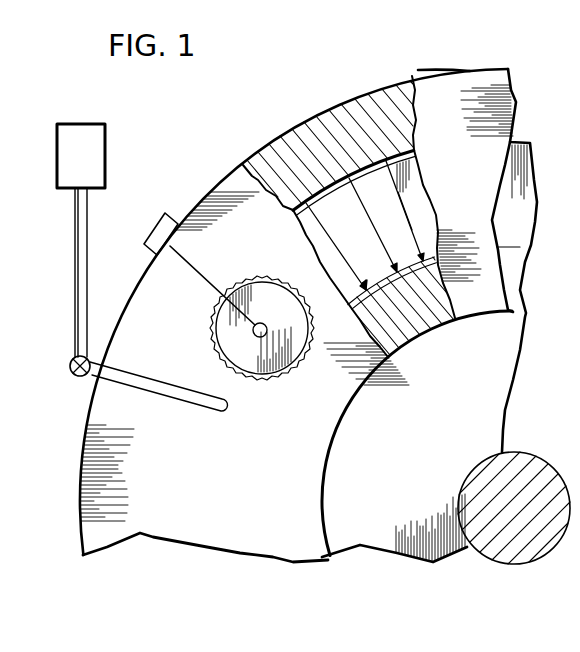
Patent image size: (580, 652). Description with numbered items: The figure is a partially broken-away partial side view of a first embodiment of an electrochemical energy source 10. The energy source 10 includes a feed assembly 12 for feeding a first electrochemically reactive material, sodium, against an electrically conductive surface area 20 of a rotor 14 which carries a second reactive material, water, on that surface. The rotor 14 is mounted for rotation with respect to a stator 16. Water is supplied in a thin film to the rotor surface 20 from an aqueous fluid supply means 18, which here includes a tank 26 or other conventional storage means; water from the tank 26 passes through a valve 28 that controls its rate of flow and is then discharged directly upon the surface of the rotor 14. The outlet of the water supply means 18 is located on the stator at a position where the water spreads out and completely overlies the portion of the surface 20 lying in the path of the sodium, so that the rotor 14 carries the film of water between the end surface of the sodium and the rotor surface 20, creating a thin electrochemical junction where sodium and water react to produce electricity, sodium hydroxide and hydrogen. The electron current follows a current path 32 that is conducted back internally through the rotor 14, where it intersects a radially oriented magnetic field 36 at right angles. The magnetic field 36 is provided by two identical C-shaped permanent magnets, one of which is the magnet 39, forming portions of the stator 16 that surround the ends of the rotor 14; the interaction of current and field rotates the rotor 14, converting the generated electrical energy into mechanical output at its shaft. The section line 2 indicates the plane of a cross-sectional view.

The energy source 10 is at (233, 143).
The feed assembly 12 is at (277, 314).
The rotor 14 is at (353, 233).
The stator 16 is at (326, 106).
The aqueous fluid supply means 18 is at (88, 208).
The electrically conductive surface area 20 is at (389, 209).
The tank 26 is at (106, 165).
The valve 28 is at (78, 377).
The electron current path 32 is at (193, 287).
The magnetic field 36 is at (410, 210).
The C-shaped permanent magnet 39 is at (419, 71).
The section line 2- 2 is at (142, 240).